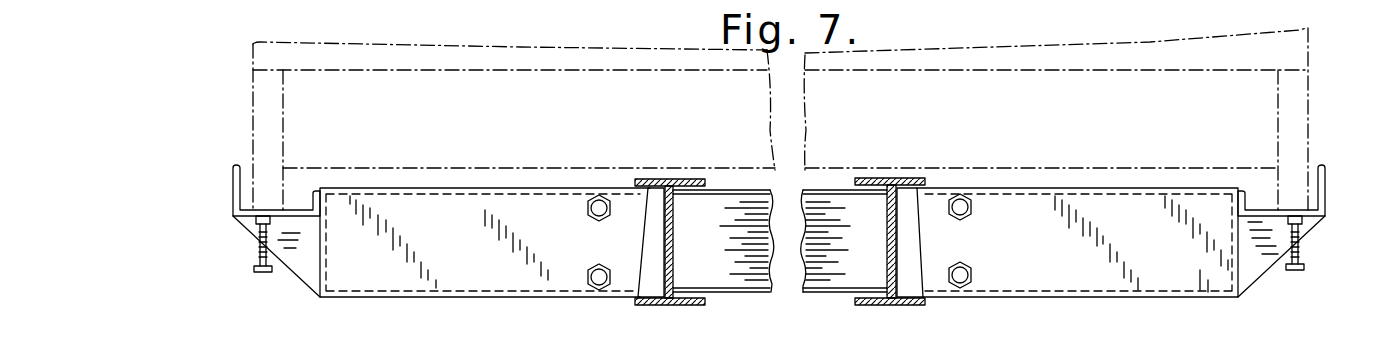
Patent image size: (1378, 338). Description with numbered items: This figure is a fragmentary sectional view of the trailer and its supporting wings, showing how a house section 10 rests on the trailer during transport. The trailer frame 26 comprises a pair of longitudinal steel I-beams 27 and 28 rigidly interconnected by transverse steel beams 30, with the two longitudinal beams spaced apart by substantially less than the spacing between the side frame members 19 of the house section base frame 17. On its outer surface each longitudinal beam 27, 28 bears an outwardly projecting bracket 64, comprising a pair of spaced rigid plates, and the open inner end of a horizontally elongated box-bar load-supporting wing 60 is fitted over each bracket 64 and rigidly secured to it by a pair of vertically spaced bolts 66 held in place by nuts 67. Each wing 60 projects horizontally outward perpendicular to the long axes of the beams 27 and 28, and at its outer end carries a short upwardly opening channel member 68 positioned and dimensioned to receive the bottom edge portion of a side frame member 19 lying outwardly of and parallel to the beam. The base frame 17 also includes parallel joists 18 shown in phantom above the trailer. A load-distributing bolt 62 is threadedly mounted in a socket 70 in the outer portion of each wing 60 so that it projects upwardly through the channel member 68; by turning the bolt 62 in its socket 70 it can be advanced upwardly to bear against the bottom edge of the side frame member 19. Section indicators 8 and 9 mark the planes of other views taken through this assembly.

The house section 10 is at (494, 53).
The side frame member 19 is at (250, 80).
The joist 18 is at (448, 129).
The section line 8- 8 is at (190, 163).
The section line 9- 9 is at (223, 295).
The channel member 68 is at (232, 178).
The base frame 17 is at (312, 186).
The socket 70 is at (243, 227).
The bolt 62 is at (259, 258).
The load-supporting wing 60 is at (470, 254).
The bracket 64 is at (642, 290).
The longitudinal I-beam 27 is at (654, 297).
The longitudinal I-beam 28 is at (870, 300).
The transverse beam 30 is at (740, 277).
The trailer frame 26 is at (805, 303).
The bolt 66 is at (590, 200).
The nut 67 is at (610, 212).